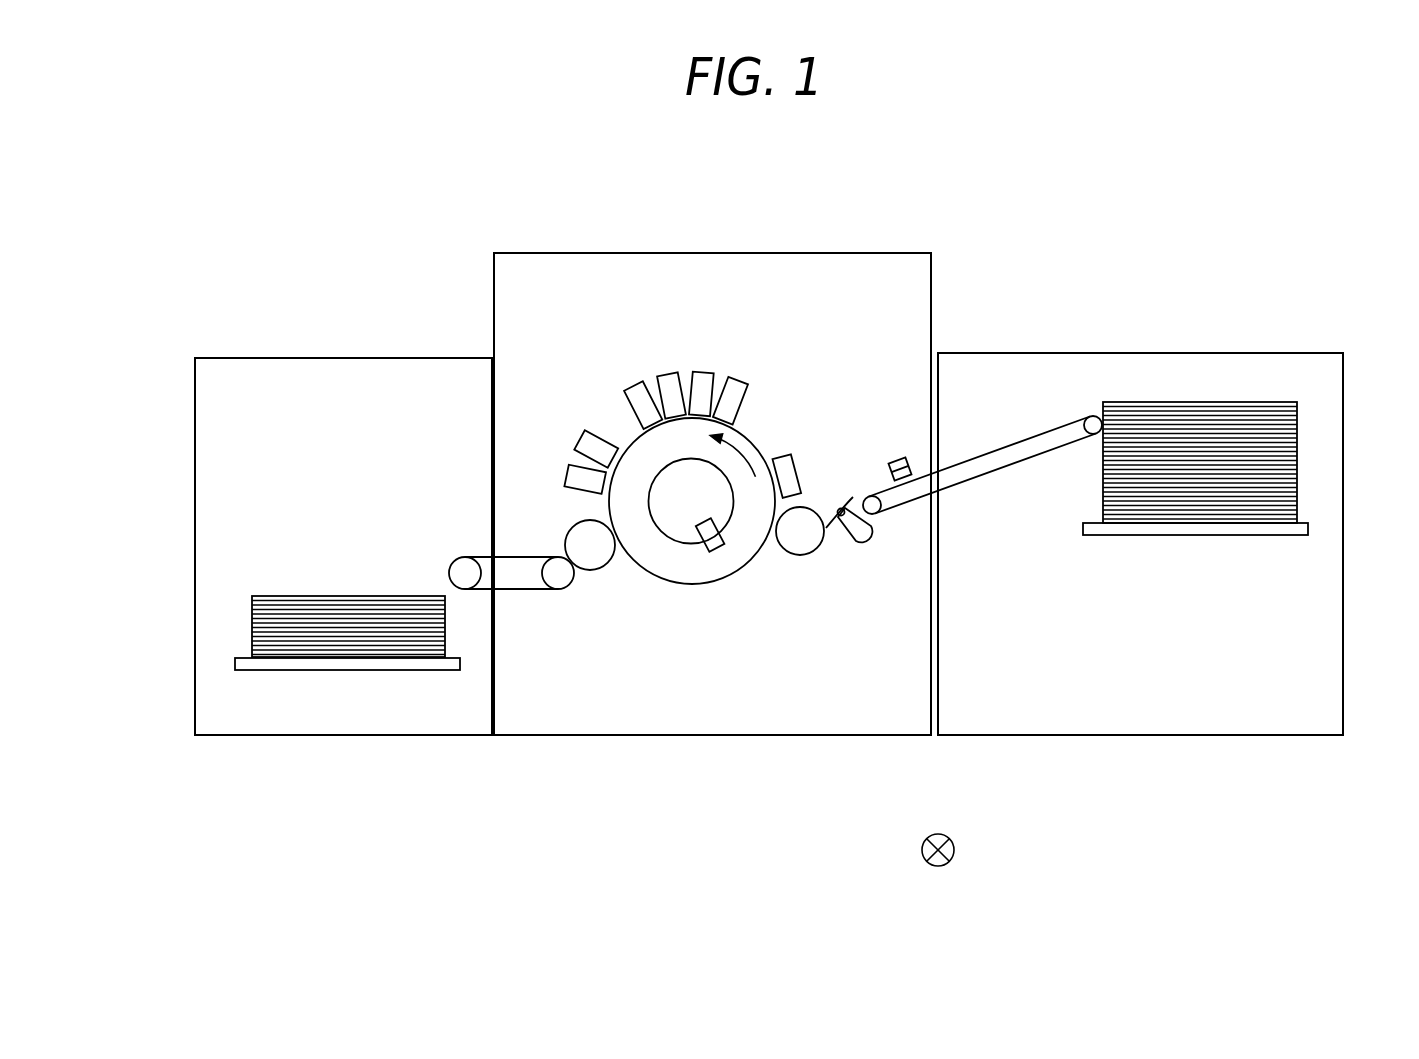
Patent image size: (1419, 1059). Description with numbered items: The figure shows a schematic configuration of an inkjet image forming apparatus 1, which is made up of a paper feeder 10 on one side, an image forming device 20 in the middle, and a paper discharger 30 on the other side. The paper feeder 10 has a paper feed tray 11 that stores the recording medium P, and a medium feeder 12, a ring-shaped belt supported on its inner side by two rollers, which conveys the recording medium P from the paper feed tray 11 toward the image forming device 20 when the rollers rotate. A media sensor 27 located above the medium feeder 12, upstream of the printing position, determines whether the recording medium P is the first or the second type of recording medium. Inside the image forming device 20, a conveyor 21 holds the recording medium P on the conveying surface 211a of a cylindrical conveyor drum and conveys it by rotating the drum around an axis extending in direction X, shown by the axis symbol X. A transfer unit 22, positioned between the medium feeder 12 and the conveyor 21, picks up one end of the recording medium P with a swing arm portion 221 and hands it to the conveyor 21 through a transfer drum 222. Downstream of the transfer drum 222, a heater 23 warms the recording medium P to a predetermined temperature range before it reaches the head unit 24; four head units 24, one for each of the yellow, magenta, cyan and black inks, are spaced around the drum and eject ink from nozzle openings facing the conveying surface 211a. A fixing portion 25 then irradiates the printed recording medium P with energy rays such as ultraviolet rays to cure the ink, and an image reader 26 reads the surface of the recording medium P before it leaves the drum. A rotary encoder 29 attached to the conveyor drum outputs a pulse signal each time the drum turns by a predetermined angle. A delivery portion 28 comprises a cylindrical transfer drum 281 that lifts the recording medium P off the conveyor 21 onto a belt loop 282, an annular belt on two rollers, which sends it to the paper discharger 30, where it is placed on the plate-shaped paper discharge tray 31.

The inkjet image forming apparatus 1 is at (762, 162).
The paper feeder 10 is at (1082, 352).
The paper feed tray 11 is at (1187, 537).
The medium feeder 12 is at (968, 453).
The image forming device 20 is at (842, 252).
The conveyor 21 is at (653, 592).
The conveying surface 211a is at (683, 585).
The transfer unit 22 is at (799, 598).
The swing arm portion 221 is at (860, 543).
The transfer drum 222 is at (800, 556).
The heater 23 is at (797, 468).
The head unit 24 is at (660, 372).
The fixing portion 25 is at (573, 445).
The image reader 26 is at (563, 475).
The media sensor 27 is at (896, 458).
The delivery portion 28 is at (532, 610).
The transfer drum 281 is at (592, 571).
The belt loop 282 is at (511, 608).
The rotary encoder 29 is at (717, 553).
The paper discharger 30 is at (317, 357).
The paper discharge tray 31 is at (350, 672).
The recording medium P is at (1152, 402).
The direction X is at (951, 851).